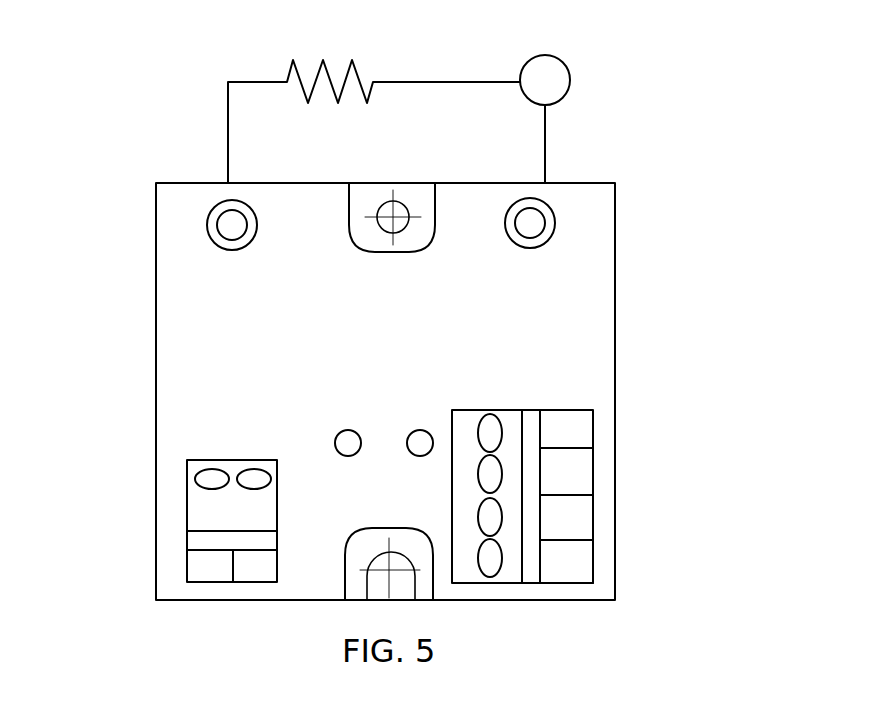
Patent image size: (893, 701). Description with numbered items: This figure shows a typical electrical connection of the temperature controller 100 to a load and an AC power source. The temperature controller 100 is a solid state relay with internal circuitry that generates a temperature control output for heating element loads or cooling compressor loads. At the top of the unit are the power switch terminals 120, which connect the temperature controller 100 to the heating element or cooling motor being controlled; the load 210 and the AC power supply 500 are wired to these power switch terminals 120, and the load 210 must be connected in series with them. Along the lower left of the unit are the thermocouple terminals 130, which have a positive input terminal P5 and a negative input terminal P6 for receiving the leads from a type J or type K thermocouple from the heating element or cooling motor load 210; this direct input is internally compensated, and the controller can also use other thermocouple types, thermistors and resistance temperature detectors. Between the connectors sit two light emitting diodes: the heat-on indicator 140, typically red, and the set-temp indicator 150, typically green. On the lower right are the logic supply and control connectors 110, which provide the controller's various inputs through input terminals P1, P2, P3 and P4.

The temperature controller 100 is at (615, 305).
The logic supply and control connectors 110 is at (540, 410).
The power switch terminals 120 is at (214, 207).
The thermocouple terminals 130 is at (230, 583).
The heat-on indicator 140 is at (336, 438).
The set-temp indicator 150 is at (431, 432).
The load 210 is at (290, 68).
The AC power supply 500 is at (545, 55).
The input terminal P1 is at (594, 563).
The input terminal P2 is at (594, 520).
The input terminal P3 is at (594, 473).
The input terminal P4 is at (594, 433).
The positive input terminal P5 is at (254, 490).
The negative input terminal P6 is at (198, 486).